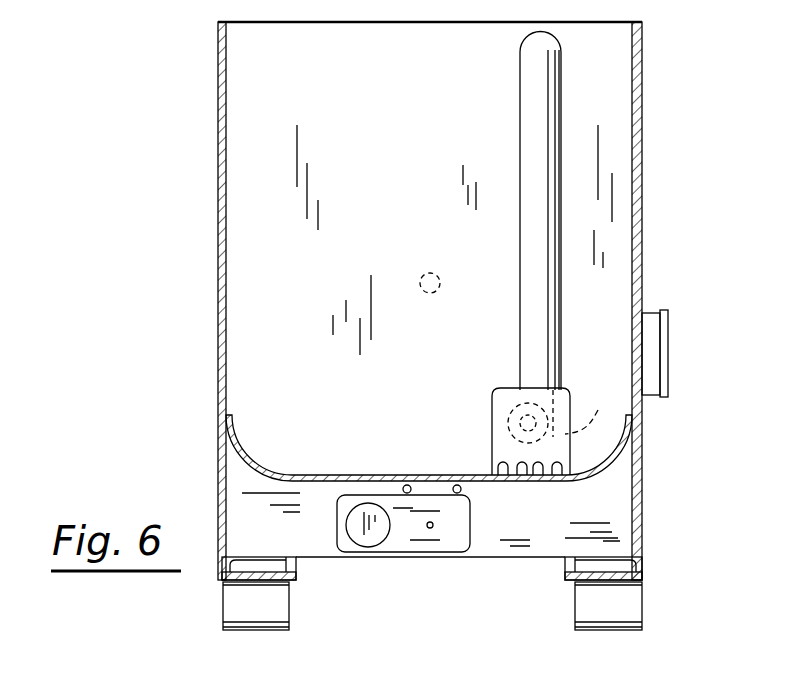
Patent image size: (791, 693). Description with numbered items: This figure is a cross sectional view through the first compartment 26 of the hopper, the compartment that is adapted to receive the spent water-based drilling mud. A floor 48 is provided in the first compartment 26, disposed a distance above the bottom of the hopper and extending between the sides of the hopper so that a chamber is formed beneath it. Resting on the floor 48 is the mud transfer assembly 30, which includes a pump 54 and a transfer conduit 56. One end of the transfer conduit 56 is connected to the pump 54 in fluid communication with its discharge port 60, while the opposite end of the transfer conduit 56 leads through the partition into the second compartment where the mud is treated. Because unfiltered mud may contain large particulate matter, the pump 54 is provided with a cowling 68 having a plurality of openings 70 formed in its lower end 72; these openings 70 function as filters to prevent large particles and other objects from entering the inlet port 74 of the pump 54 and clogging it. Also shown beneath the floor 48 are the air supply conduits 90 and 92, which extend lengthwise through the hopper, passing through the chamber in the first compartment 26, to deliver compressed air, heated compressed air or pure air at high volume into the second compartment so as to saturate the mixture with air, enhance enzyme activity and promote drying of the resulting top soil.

The first compartment 26 is at (254, 251).
The mud transfer assembly 30 is at (516, 104).
The floor 48 is at (347, 475).
The pump 54 is at (594, 408).
The transfer conduit 56 is at (520, 226).
The discharge port 60 is at (530, 405).
The cowling 68 is at (573, 392).
The openings 70 is at (505, 477).
The lower end 72 is at (492, 450).
The inlet port 74 is at (522, 422).
The air supply conduit 90 is at (404, 486).
The air supply conduit 92 is at (462, 493).